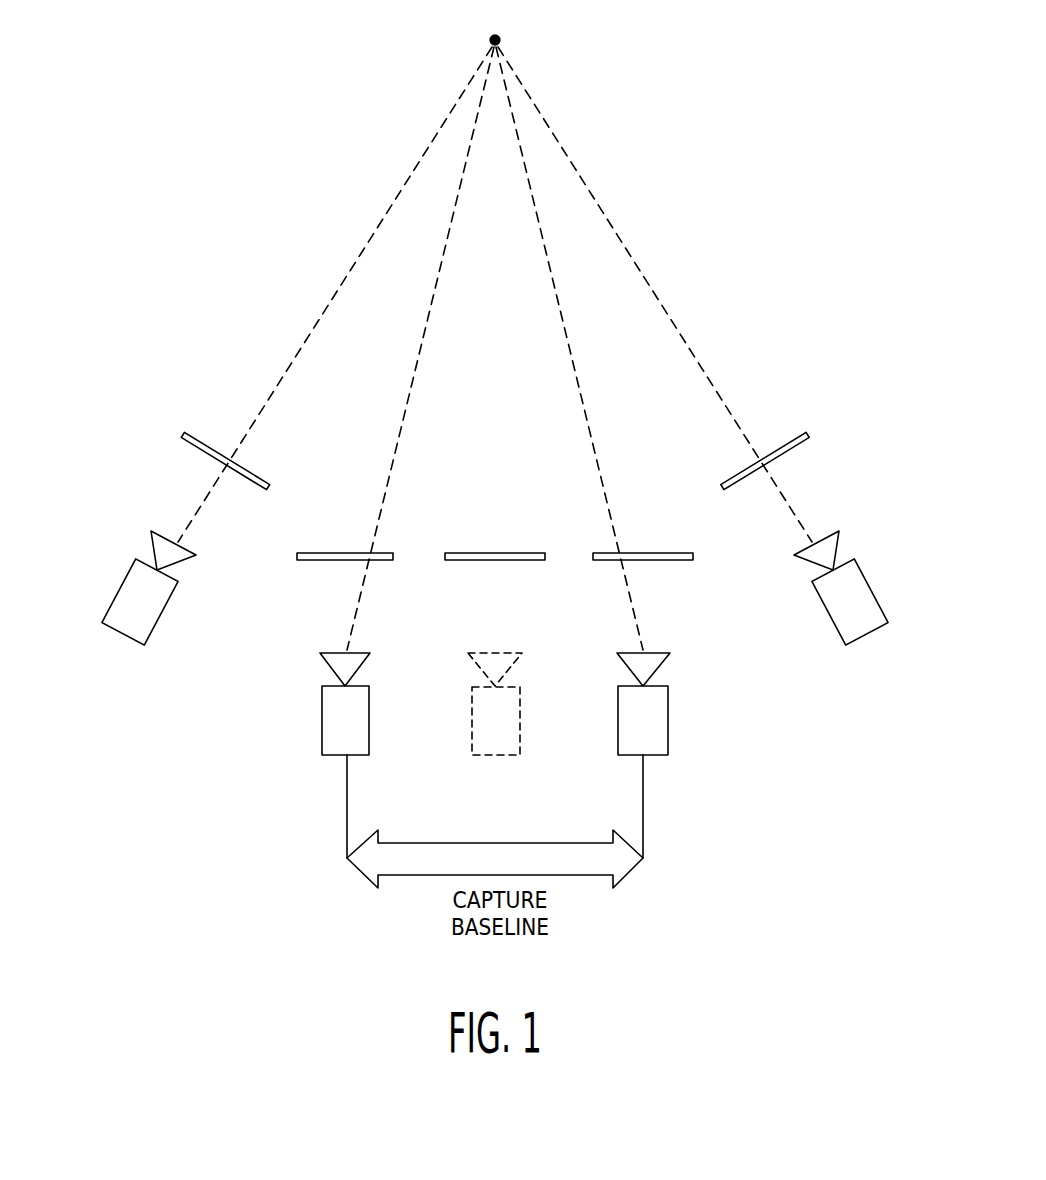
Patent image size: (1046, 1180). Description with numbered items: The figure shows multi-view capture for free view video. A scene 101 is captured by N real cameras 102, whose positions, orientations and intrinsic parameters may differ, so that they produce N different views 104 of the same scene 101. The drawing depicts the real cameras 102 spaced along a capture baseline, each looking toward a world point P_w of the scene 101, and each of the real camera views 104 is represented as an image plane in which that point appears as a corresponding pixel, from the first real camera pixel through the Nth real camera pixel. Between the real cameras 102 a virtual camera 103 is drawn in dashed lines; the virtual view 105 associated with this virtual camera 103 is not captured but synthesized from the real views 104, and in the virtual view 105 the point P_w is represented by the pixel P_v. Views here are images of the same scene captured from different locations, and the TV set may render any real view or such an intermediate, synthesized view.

The scene 101 is at (491, 39).
The real cameras 102 is at (328, 707).
The virtual camera 103 is at (512, 718).
The real camera views 104 is at (300, 553).
The virtual view 105 is at (530, 553).